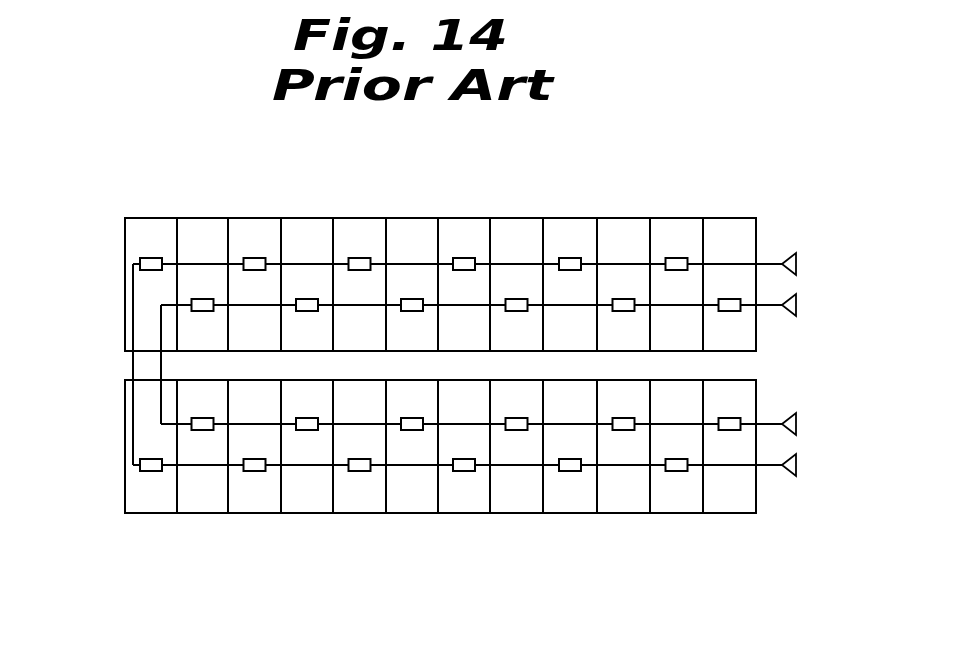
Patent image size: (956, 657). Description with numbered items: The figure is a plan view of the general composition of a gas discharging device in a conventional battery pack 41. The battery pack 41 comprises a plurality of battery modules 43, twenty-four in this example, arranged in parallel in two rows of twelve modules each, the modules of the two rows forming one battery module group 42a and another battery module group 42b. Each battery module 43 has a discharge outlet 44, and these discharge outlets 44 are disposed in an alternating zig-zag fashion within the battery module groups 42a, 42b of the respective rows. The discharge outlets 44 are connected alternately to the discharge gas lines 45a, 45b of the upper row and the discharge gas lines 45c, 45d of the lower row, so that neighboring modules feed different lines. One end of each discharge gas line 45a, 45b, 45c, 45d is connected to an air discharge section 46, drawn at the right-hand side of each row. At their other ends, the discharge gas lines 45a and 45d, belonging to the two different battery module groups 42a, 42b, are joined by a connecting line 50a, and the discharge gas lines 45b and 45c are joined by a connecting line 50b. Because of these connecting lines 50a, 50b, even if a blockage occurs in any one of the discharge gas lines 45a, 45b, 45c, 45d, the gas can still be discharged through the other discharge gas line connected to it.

The battery pack 41 is at (441, 381).
The battery module group 42a is at (481, 257).
The battery module group 42b is at (759, 516).
The battery module 43 is at (457, 235).
The discharge outlet 44 is at (360, 257).
The discharge gas line 45a is at (457, 211).
The discharge gas line 45b is at (471, 231).
The discharge gas line 45c is at (471, 516).
The discharge gas line 45d is at (457, 537).
The air discharge section 46 is at (798, 298).
The connecting line 50a is at (105, 426).
The connecting line 50b is at (178, 451).